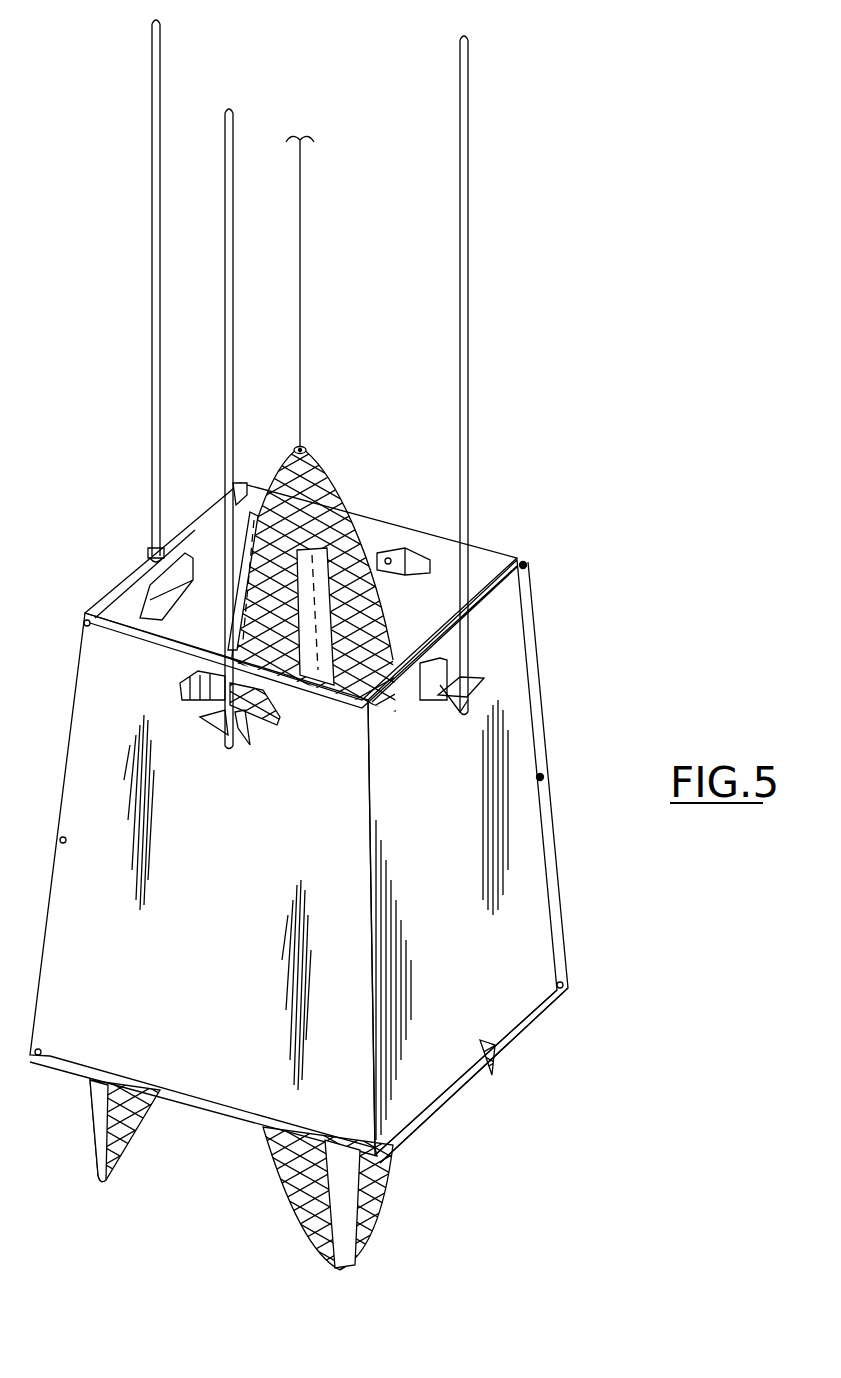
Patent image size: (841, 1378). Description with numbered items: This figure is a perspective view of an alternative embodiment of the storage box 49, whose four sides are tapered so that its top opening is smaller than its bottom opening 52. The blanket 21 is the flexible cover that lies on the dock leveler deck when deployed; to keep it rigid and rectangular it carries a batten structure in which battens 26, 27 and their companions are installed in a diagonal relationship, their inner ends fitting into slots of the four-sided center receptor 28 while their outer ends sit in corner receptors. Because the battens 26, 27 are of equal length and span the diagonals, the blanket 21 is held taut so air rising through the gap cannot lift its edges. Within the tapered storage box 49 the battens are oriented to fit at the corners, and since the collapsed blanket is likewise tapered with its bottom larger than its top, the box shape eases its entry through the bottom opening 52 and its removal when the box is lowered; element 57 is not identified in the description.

The blanket 21 is at (320, 510).
The batten 26 is at (317, 632).
The batten 27 is at (247, 553).
The center receptor 28 is at (303, 445).
The storage box 49 is at (236, 897).
The bottom opening 52 is at (517, 1046).
The upper rim 57 is at (480, 553).